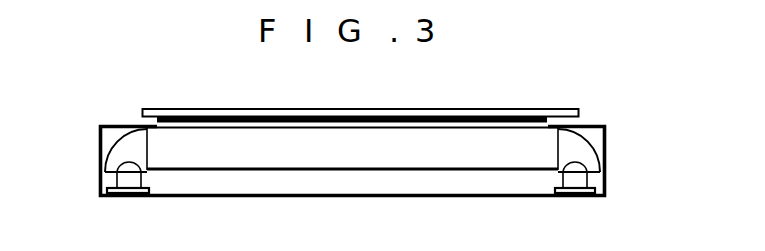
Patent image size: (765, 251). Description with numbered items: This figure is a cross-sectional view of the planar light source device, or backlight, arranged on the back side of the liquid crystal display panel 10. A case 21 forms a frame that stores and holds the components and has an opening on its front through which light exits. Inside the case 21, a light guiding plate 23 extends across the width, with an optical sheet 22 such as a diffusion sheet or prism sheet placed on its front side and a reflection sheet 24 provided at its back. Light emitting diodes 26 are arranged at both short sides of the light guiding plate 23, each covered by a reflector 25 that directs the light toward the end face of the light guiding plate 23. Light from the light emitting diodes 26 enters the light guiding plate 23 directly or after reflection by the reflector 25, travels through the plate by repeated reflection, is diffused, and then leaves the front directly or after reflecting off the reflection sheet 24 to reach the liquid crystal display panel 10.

The liquid crystal display panel 10 is at (532, 112).
The case 21 is at (99, 163).
The optical sheet 22 is at (171, 108).
The light guiding plate 23 is at (415, 138).
The reflection sheet 24 is at (200, 170).
The reflector 25 is at (597, 150).
The light emitting diodes 26 is at (132, 178).